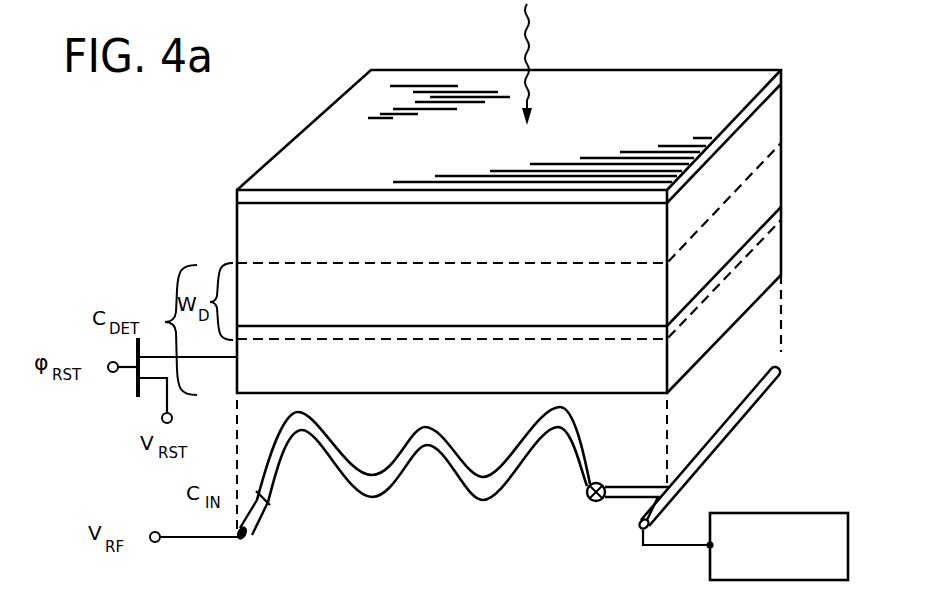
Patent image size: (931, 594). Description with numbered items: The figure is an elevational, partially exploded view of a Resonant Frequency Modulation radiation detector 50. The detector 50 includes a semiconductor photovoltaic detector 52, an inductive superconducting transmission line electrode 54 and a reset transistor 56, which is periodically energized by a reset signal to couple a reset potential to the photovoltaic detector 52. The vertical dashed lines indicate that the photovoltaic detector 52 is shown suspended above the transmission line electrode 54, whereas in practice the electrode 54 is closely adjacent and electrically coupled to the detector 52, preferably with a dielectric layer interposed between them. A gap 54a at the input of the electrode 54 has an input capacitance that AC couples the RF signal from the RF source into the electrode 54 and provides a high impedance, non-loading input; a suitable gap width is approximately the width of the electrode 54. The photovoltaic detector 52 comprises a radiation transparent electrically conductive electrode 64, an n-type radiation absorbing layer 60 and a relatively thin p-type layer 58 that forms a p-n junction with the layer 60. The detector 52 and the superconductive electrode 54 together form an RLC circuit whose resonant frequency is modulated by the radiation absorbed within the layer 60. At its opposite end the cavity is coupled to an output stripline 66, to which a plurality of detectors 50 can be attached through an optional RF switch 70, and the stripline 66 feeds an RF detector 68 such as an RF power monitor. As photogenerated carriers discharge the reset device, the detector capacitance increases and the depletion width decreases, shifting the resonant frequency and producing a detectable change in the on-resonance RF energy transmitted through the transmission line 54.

The Resonant Frequency Modulation radiation detector 50 is at (227, 167).
The semiconductor photovoltaic detector 52 is at (371, 62).
The inductive superconducting transmission line electrode 54 is at (372, 498).
The gap 54a is at (265, 506).
The reset transistor 56 is at (138, 394).
The p-type layer 58 is at (757, 258).
The n-type radiation absorbing layer 60 is at (763, 198).
The radiation transparent electrically conductive electrode 64 is at (612, 105).
The output stripline 66 is at (752, 405).
The RF detector 68 is at (855, 497).
The RF switch 70 is at (588, 502).